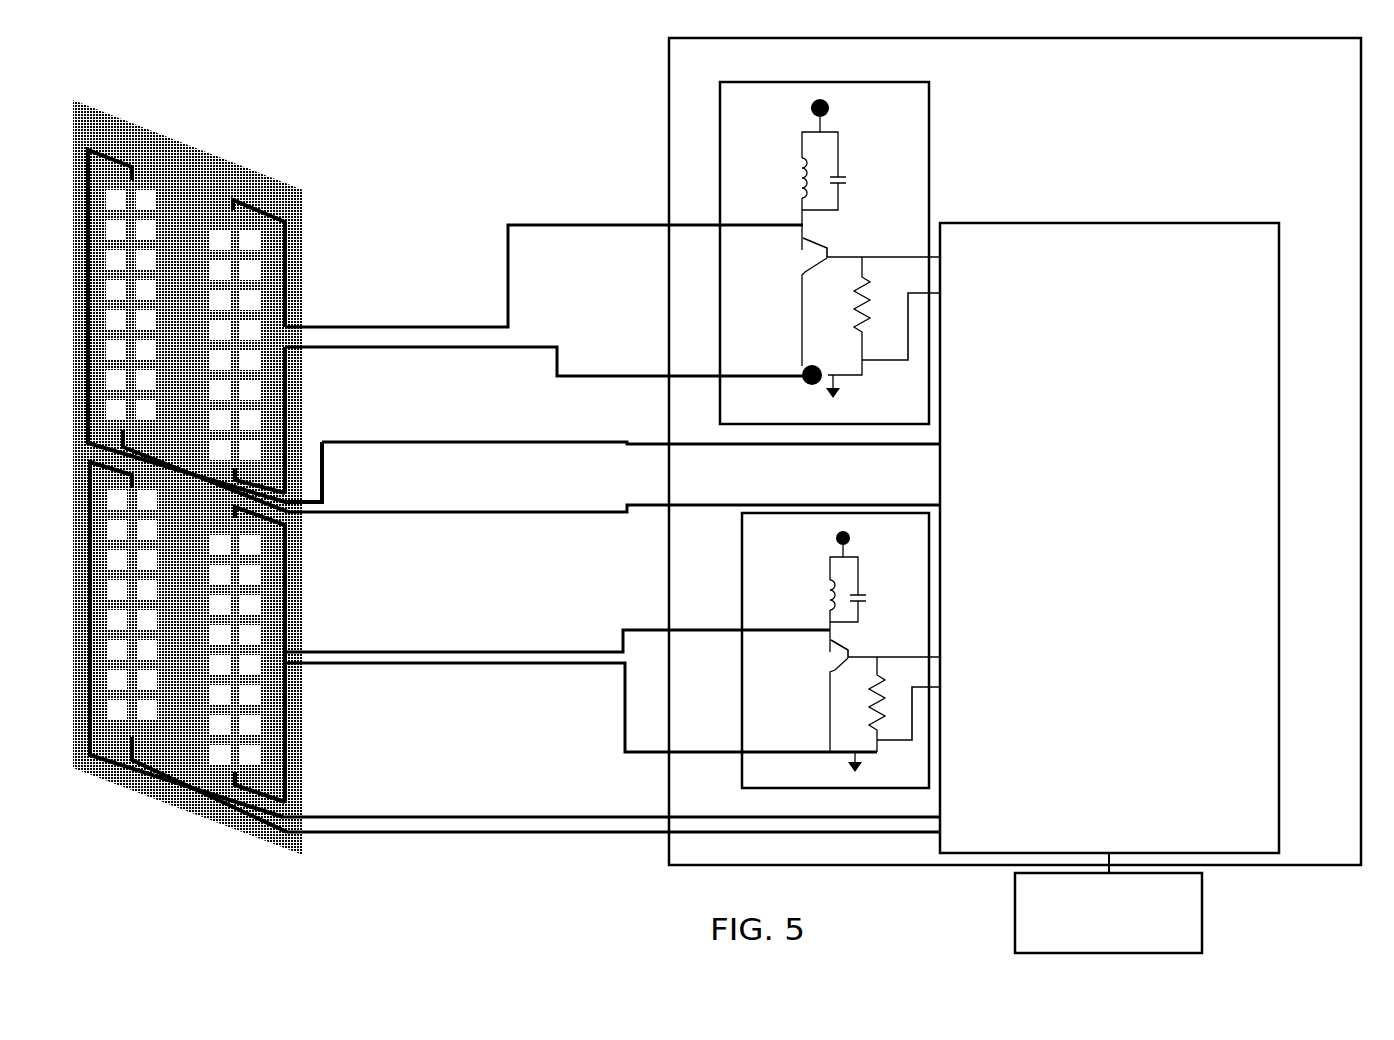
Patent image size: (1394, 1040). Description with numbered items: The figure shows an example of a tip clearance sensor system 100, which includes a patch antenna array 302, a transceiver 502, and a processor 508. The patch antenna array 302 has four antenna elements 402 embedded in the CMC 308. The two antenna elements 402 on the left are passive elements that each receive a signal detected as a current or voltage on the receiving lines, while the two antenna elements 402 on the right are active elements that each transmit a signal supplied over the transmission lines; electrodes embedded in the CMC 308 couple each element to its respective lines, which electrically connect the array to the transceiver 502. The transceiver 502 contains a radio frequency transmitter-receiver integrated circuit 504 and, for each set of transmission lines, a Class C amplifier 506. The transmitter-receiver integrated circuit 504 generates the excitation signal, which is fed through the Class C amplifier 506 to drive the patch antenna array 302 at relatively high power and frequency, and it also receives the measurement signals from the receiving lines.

The tip clearance sensor system 100 is at (1330, 904).
The patch antenna array 302 is at (261, 457).
The CMC 308 is at (137, 134).
The antenna elements 402 is at (123, 310).
The transceiver 502 is at (1321, 82).
The transmitter-receiver integrated circuit 504 is at (1028, 222).
The Class C amplifier 506 is at (935, 99).
The processor 508 is at (1181, 942).